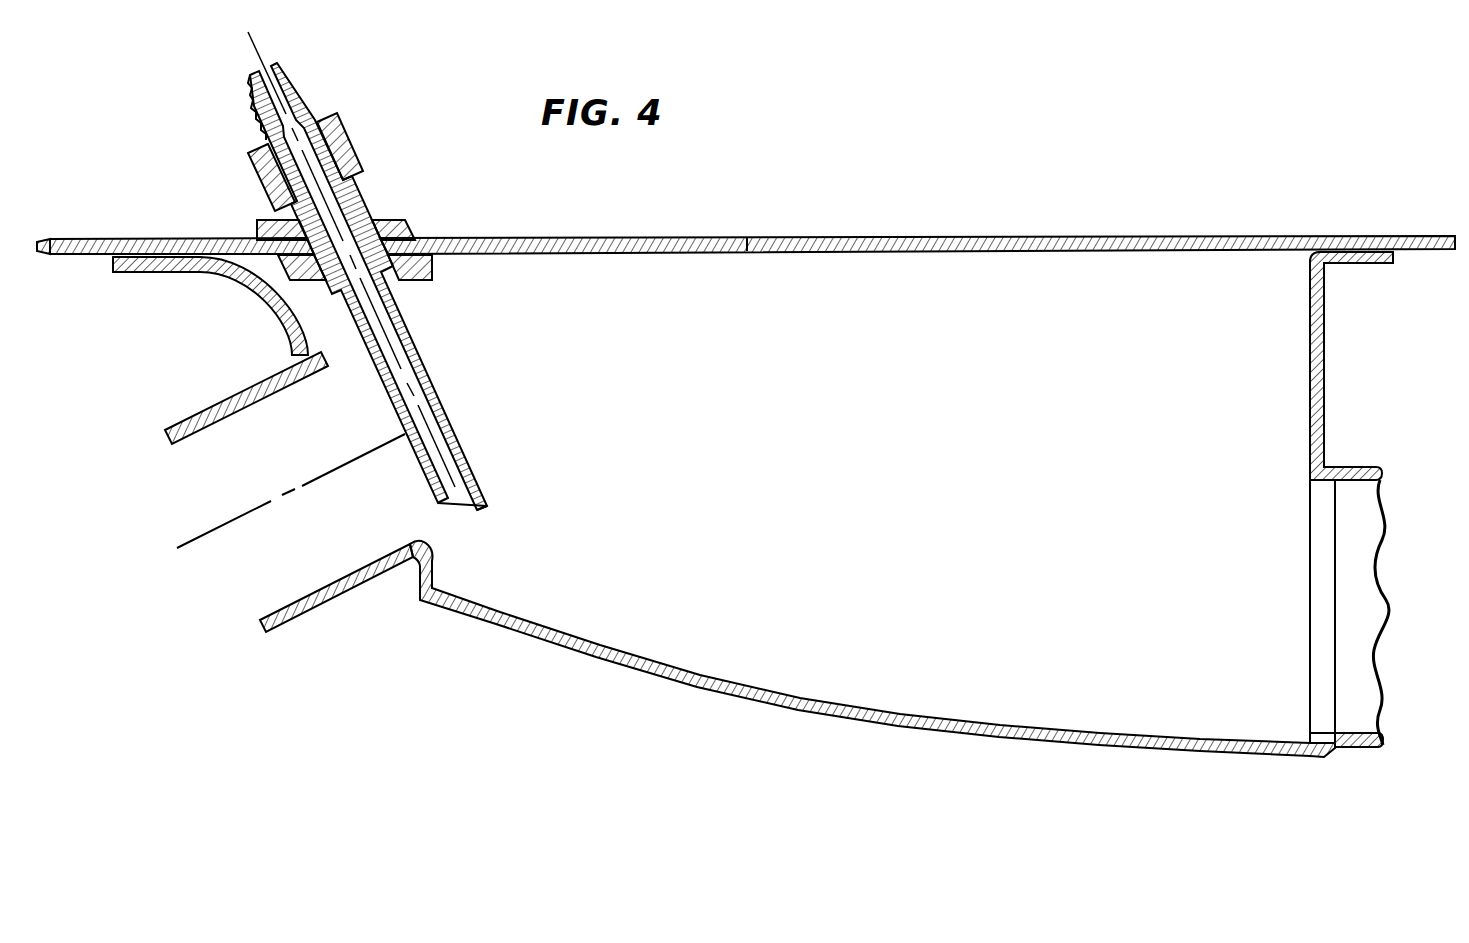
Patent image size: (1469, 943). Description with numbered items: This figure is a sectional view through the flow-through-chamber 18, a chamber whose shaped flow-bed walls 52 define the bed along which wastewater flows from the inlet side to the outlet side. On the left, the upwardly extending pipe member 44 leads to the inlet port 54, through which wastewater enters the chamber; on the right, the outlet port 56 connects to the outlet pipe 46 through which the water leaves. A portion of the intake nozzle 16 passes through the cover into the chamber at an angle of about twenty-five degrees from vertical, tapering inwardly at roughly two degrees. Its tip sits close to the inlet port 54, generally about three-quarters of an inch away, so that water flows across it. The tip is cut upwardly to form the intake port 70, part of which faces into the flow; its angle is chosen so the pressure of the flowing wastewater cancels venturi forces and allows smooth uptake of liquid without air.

The intake nozzle 16 is at (447, 380).
The flow-through-chamber 18 is at (1127, 388).
The upwardly extending pipe member 44 is at (240, 390).
The outlet pipe 46 is at (1385, 515).
The flow-bed walls 52 is at (917, 712).
The inlet port 54 is at (395, 478).
The outlet port 56 is at (1320, 567).
The intake port 70 is at (462, 512).